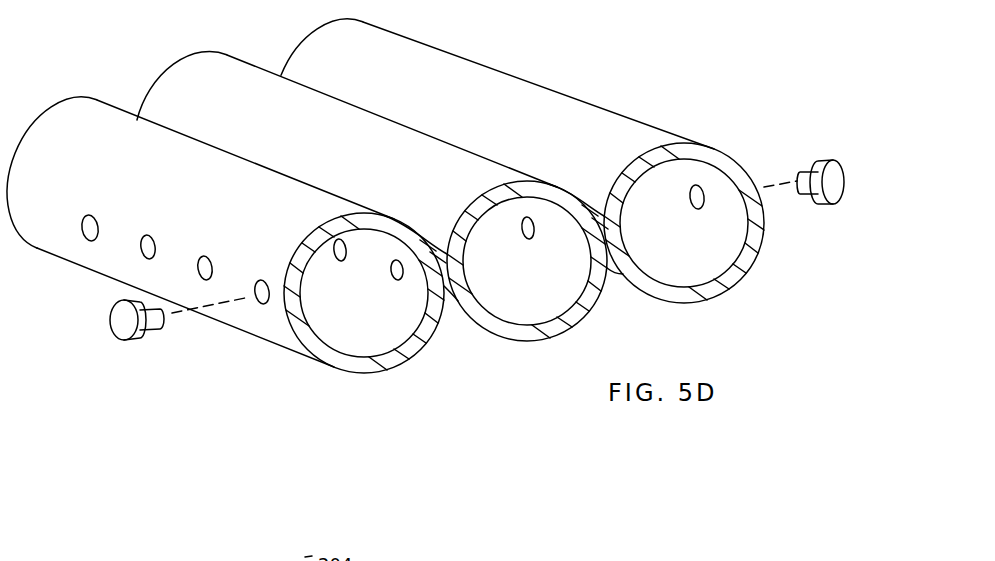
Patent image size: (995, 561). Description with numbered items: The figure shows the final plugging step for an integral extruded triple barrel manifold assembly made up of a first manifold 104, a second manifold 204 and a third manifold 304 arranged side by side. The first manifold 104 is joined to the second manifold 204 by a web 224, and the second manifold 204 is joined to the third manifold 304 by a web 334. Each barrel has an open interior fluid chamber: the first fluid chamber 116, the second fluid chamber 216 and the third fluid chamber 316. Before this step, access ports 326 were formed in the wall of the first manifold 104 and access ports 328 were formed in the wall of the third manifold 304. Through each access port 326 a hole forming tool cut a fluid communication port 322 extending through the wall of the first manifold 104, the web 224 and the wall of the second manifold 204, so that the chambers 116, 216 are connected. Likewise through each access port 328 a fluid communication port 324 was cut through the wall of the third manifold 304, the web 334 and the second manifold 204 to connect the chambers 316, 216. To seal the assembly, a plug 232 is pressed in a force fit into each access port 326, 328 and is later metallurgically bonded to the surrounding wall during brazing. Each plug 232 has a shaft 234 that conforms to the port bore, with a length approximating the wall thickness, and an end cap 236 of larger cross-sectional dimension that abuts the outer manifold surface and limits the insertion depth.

The first manifold 104 is at (98, 117).
The second manifold 204 is at (227, 68).
The third manifold 304 is at (425, 53).
The interior fluid chamber of the first manifold 116 is at (367, 335).
The interior fluid chamber of the second manifold 216 is at (550, 308).
The interior fluid chamber of the third manifold 316 is at (703, 266).
The web 224 is at (453, 290).
The web 334 is at (616, 268).
The access port 326 is at (140, 239).
The fluid communication port 322 is at (347, 252).
The fluid communication port 324 is at (533, 239).
The access port 328 is at (700, 194).
The plug 232 is at (480, 246).
The shaft 234 is at (157, 328).
The end cap 236 is at (113, 340).